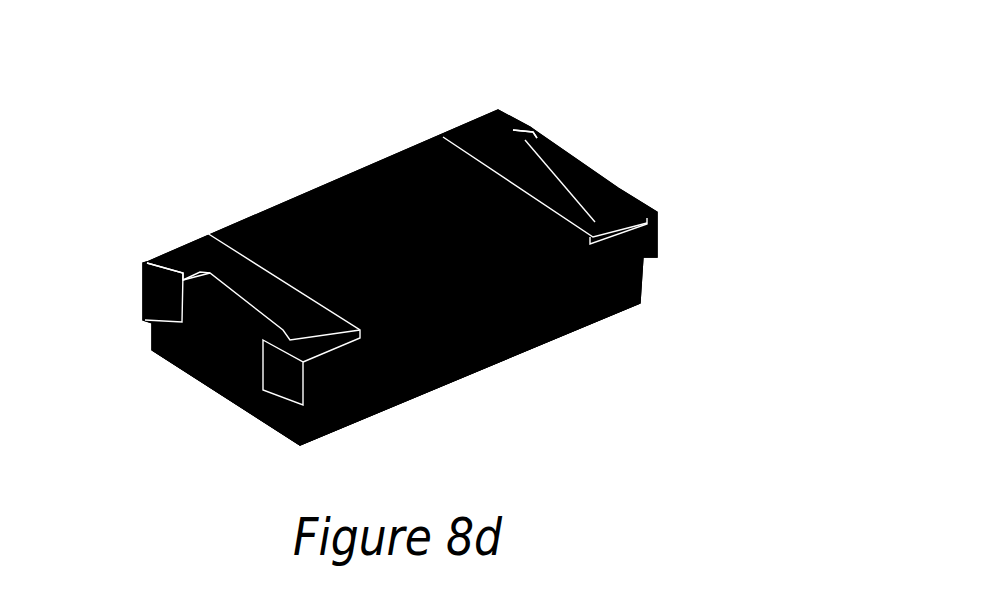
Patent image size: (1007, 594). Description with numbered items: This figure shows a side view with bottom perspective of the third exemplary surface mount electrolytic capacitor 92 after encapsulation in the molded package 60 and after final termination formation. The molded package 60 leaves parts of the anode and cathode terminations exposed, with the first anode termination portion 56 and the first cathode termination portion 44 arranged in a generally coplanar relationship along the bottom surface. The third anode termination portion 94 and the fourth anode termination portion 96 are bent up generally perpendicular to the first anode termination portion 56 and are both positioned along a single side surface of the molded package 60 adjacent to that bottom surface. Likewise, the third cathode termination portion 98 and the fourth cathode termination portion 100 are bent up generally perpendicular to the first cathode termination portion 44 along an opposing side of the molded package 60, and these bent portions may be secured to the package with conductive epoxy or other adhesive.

The fourth cathode termination portion 100 is at (547, 110).
The electrolytic capacitor 92 is at (678, 160).
The first cathode termination portion 44 is at (473, 128).
The first anode termination portion 56 is at (163, 255).
The third anode termination portion 94 is at (153, 300).
The fourth anode termination portion 96 is at (257, 420).
The third cathode termination portion 98 is at (653, 243).
The molded package 60 is at (530, 347).